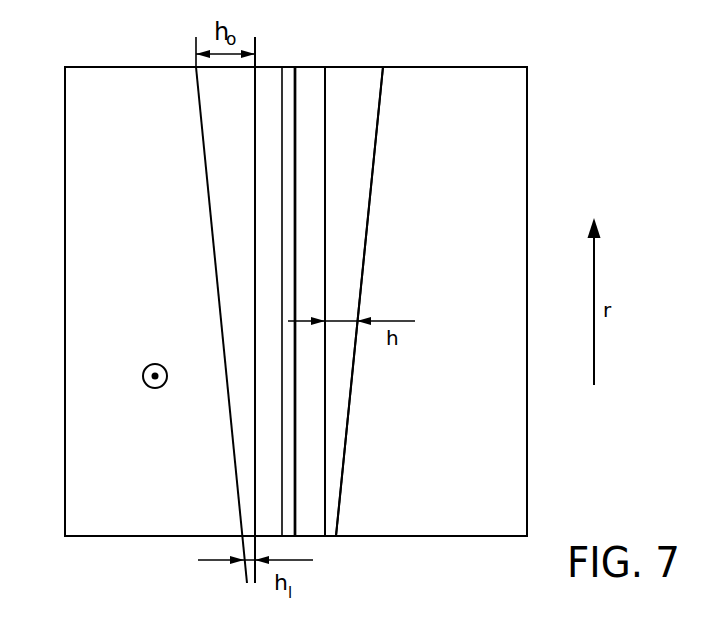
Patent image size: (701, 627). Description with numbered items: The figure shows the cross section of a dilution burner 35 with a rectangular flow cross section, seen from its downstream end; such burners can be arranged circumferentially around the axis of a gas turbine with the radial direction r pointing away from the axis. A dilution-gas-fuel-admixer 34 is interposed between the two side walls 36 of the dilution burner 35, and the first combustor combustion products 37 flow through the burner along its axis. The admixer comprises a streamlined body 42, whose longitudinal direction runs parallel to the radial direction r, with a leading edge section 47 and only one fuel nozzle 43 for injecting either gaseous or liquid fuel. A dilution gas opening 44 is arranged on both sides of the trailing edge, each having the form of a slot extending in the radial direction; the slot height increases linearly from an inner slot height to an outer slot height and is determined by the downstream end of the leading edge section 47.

The dilution-gas-fuel-admixer 34 is at (100, 259).
The dilution burner 35 is at (642, 136).
The side walls 36 is at (114, 68).
The first combustor combustion products 37 is at (141, 370).
The streamlined body 42 is at (313, 222).
The fuel nozzle 43 is at (289, 181).
The dilution gas openings 44 is at (337, 280).
The leading edge section 47 is at (345, 443).